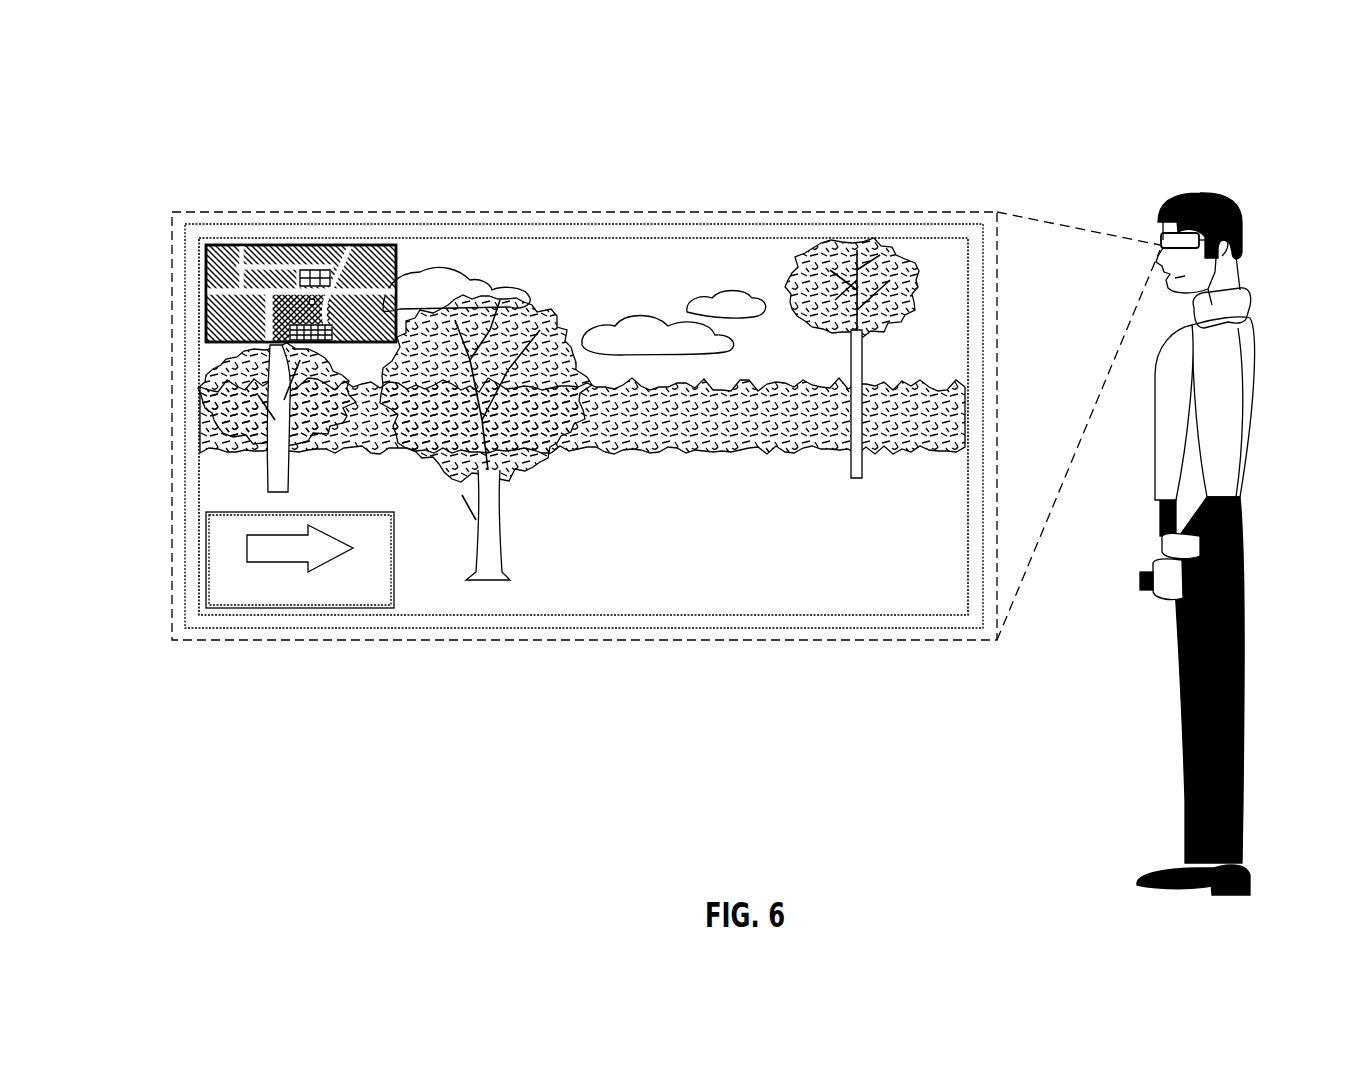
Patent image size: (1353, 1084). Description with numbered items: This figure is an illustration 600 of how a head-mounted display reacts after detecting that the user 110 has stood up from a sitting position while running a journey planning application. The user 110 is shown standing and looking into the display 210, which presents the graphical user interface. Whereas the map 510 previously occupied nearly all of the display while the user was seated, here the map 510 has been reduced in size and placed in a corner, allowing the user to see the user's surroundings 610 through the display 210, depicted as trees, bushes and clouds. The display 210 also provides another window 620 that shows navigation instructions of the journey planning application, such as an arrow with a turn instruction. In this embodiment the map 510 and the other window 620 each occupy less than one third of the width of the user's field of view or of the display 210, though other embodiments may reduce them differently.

The illustration 600 is at (218, 166).
The display 210 is at (1062, 255).
The user 110 is at (1243, 332).
The map 510 is at (208, 300).
The user's surroundings 610 is at (206, 458).
The other window 620 is at (208, 563).